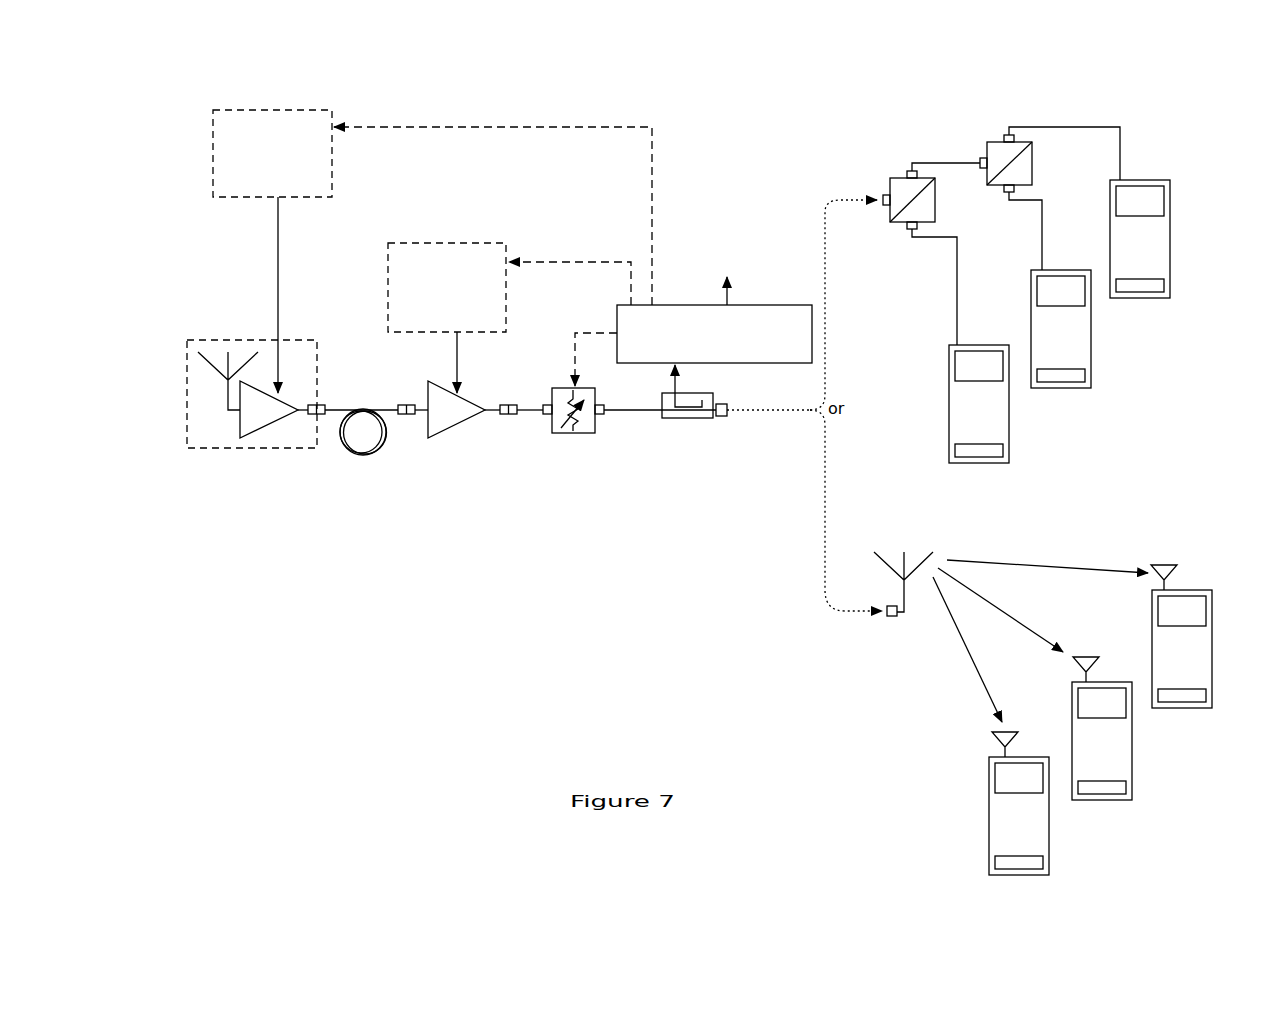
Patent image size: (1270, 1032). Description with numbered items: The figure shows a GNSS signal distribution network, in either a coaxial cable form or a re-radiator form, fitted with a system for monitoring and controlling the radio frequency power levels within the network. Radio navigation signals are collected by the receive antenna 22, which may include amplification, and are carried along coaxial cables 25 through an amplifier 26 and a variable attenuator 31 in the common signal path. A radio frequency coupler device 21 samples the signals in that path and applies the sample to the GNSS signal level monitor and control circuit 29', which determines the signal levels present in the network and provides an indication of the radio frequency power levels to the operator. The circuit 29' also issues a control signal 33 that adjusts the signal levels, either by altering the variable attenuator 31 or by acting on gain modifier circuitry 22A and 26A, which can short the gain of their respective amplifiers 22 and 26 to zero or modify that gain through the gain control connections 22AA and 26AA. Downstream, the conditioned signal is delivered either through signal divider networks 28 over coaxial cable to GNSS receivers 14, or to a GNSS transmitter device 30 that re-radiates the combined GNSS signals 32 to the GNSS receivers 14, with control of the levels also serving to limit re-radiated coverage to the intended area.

The GNSS receiver 14 is at (1170, 298).
The radio frequency coupler device 21 is at (718, 397).
The GNSS signal distribution network receive antenna 22 is at (220, 448).
The gain modifier circuitry 22A is at (248, 105).
The gain control connection 22AA is at (280, 258).
The coaxial cable 25 is at (366, 405).
The amplifier 26 is at (463, 425).
The gain modifier circuitry 26A is at (482, 242).
The gain control connection 26AA is at (460, 360).
The signal divider network 28 is at (903, 172).
The GNSS signal level monitor and control circuit 29' is at (720, 283).
The GNSS transmitter device 30 is at (899, 554).
The variable attenuator 31 is at (587, 433).
The re-radiated GNSS signals 32 is at (1086, 566).
The control signal 33 is at (467, 127).